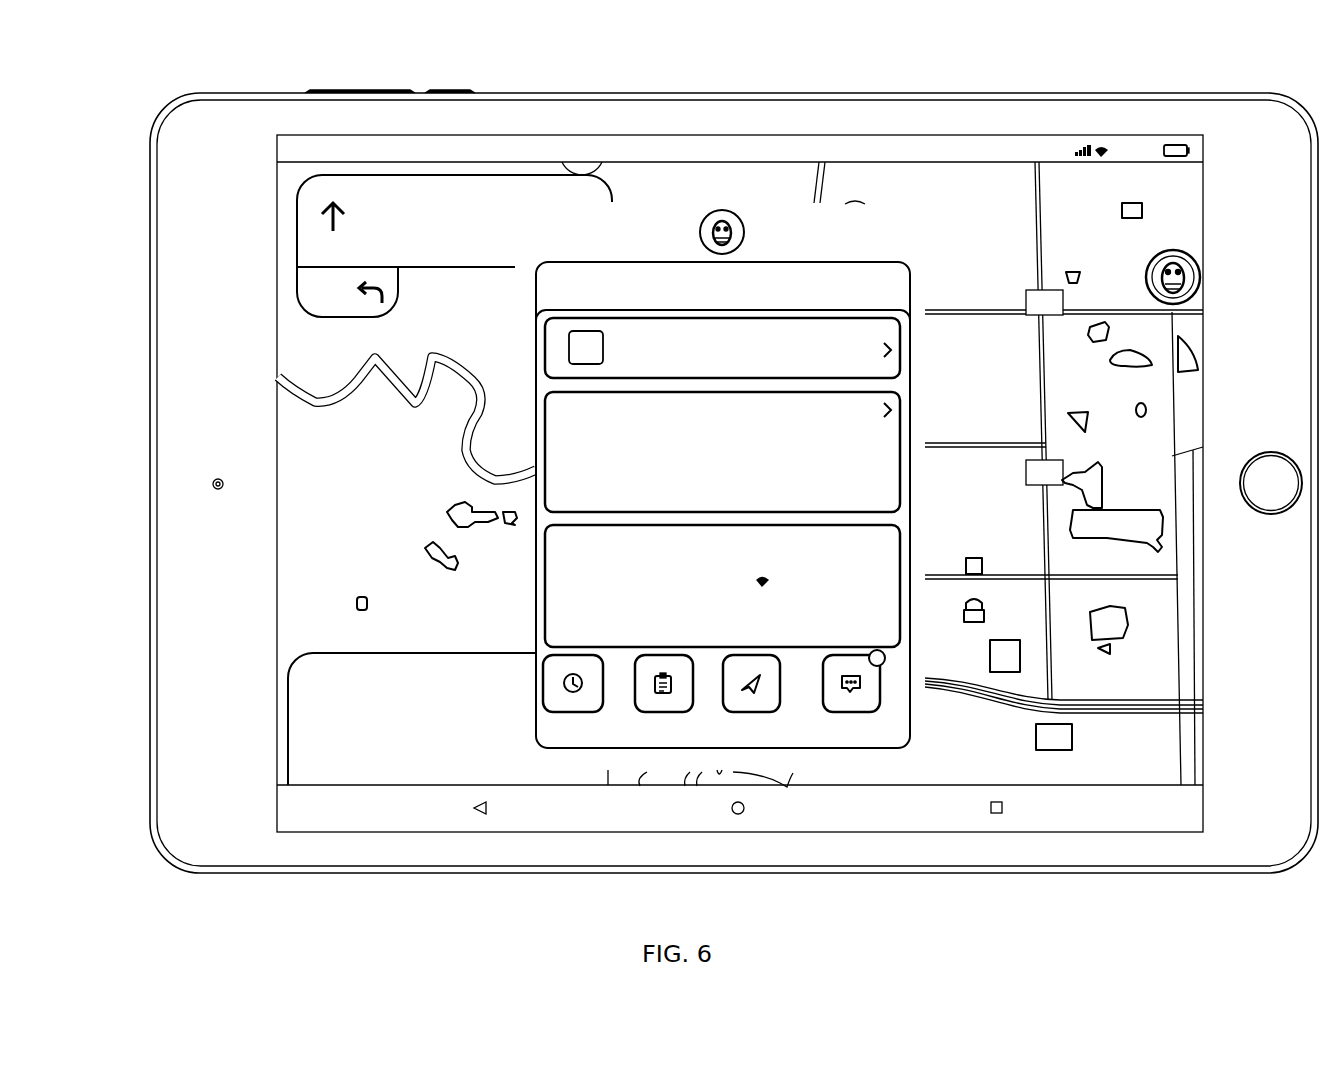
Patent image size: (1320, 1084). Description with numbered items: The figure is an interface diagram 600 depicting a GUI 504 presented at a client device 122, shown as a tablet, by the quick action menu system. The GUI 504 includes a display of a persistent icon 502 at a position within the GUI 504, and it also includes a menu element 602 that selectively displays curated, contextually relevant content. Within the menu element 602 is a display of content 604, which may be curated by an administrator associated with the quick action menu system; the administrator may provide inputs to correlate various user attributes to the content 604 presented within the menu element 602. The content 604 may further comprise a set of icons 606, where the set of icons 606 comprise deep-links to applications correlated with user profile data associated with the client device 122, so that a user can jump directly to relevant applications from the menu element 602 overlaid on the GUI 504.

The interface diagram 600 is at (128, 78).
The client device 122 is at (150, 192).
The GUI 504 is at (277, 299).
The persistent icon 502 is at (1146, 280).
The menu element 602 is at (602, 262).
The content 604 is at (520, 368).
The set of icons 606 is at (525, 656).